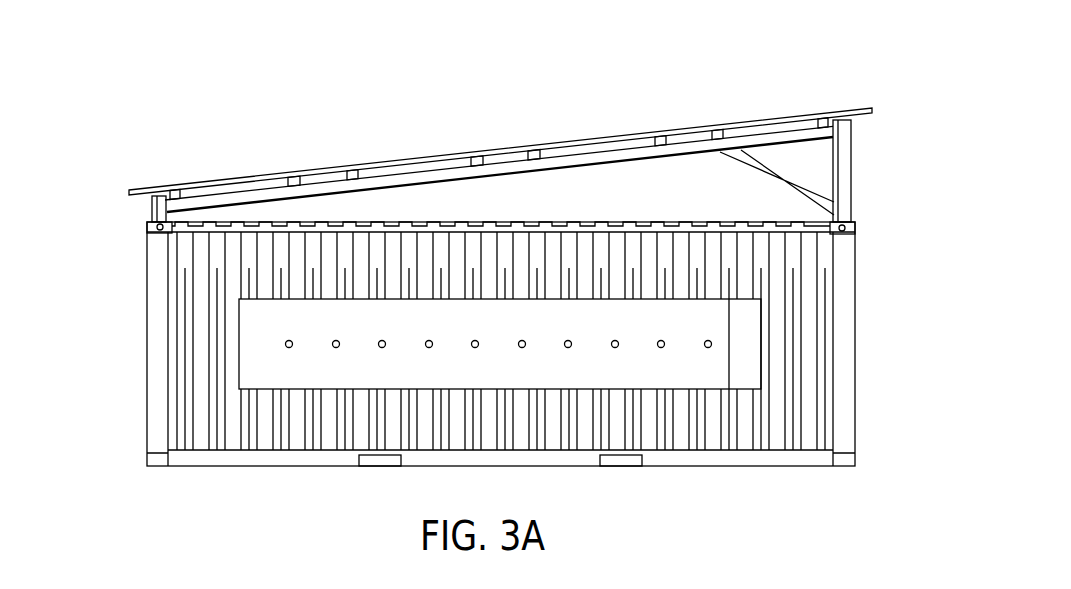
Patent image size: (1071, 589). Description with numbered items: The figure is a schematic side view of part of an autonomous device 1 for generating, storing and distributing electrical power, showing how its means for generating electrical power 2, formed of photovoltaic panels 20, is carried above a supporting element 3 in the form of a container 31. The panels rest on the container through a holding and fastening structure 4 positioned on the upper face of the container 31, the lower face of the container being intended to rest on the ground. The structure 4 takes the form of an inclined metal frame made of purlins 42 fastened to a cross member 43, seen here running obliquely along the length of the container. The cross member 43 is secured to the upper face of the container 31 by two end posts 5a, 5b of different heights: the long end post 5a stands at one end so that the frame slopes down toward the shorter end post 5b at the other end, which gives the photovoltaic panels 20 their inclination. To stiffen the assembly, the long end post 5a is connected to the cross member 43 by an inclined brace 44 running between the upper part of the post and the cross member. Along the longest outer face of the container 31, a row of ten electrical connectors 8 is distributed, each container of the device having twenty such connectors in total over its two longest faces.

The autonomous device 1 is at (385, 93).
The means for generating electrical power 2 is at (658, 103).
The supporting element 3 is at (739, 498).
The holding and fastening structure 4 is at (882, 131).
The long end post 5a is at (876, 205).
The end post 5b is at (126, 215).
The electrical connector 8 is at (413, 380).
The photovoltaic panel 20 is at (528, 126).
The container 31 is at (873, 372).
The purlin 42 is at (290, 158).
The cross member 43 is at (788, 115).
The inclined brace 44 is at (788, 210).